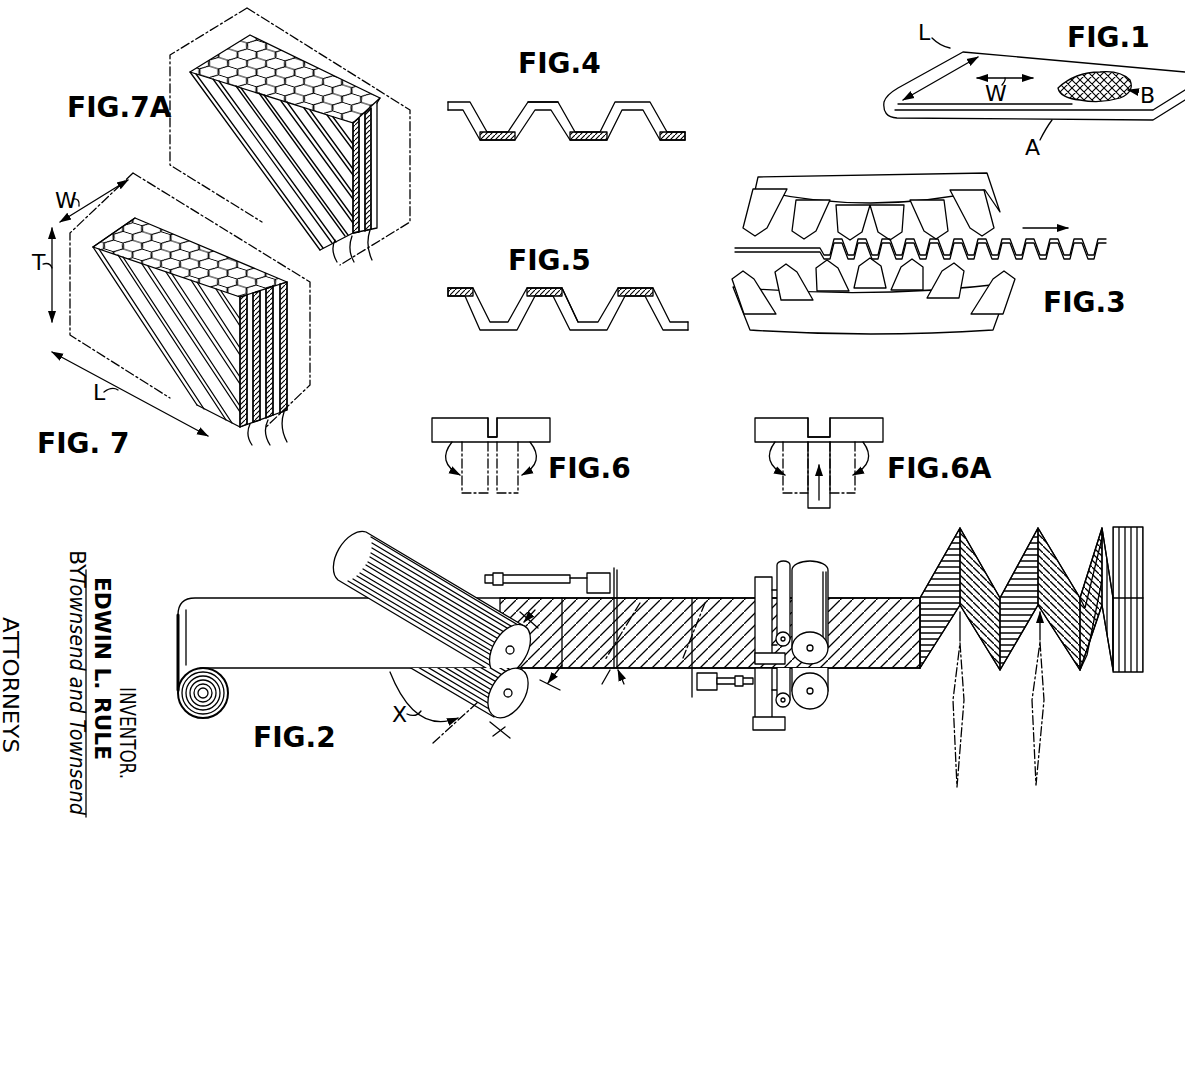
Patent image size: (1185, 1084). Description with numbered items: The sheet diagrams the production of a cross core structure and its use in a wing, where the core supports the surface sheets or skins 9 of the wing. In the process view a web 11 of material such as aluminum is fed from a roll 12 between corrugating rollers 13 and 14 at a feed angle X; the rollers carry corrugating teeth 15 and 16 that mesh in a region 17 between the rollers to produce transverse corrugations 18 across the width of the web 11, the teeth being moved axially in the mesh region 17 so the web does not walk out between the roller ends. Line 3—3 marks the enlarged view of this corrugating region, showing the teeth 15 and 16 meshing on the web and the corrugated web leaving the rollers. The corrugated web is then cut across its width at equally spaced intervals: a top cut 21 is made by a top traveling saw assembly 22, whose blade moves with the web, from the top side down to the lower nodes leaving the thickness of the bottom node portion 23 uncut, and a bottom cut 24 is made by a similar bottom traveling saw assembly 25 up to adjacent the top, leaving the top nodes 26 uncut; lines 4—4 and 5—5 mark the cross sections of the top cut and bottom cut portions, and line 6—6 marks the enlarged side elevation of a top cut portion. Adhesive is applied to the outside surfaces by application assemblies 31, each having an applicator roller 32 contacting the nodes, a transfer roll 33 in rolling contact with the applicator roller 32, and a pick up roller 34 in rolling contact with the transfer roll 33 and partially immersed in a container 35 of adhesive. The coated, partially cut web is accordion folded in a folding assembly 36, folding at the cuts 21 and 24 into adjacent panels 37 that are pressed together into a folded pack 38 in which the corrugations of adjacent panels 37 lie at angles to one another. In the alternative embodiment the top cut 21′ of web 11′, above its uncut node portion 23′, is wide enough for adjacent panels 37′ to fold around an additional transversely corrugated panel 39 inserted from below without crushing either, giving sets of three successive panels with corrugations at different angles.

In FIG. 2, the section line 3— 3 is at (497, 686).
In FIG. 2, the section line 4— 4 is at (632, 633).
In FIG. 2, the section line 5— 5 is at (706, 635).
In FIG. 2, the section line 6- 6 is at (614, 686).
In FIG. 1, the surface sheets or skins 9 is at (930, 104).
In FIG. 4, the web 11 is at (585, 106).
In FIG. 5, the web 11 is at (541, 309).
In FIG. 6, the web 11 is at (513, 411).
In FIG. 2, the web 11 is at (549, 617).
In FIG. 6A, the web 11' is at (846, 419).
In FIG. 2, the roll 12 is at (202, 719).
In FIG. 3, the corrugating roller 13 is at (848, 177).
In FIG. 2, the corrugating roller 13 is at (352, 556).
In FIG. 3, the corrugating roller 14 is at (900, 314).
In FIG. 2, the corrugating roller 14 is at (514, 706).
In FIG. 3, the corrugating teeth 15 is at (897, 215).
In FIG. 3, the corrugating teeth 16 is at (905, 285).
In FIG. 3, the mesh region 17 is at (753, 238).
In FIG. 3, the transverse corrugations 18 is at (1078, 248).
In FIG. 4, the top cut 21 is at (587, 95).
In FIG. 6, the top cut 21 is at (475, 409).
In FIG. 2, the top cut 21 is at (634, 618).
In FIG. 6A, the top cut 21' is at (793, 409).
In FIG. 2, the top traveling saw assembly 22 is at (557, 574).
In FIG. 4, the bottom node portion 23 is at (582, 150).
In FIG. 6, the bottom node portion 23 is at (510, 409).
In FIG. 6A, the adhesive layer (modified) 23' is at (841, 409).
In FIG. 5, the bottom cut 24 is at (568, 312).
In FIG. 2, the bottom cut 24 is at (694, 598).
In FIG. 2, the bottom traveling saw assembly 25 is at (722, 693).
In FIG. 5, the top nodes 26 is at (527, 288).
In FIG. 2, the application assemblies 31 is at (829, 568).
In FIG. 2, the applicator roller 32 is at (830, 590).
In FIG. 2, the transfer roll 33 is at (783, 564).
In FIG. 2, the roller bracket 34 is at (772, 580).
In FIG. 2, the container 35 is at (757, 600).
In FIG. 2, the folding assembly 36 is at (1031, 530).
In FIG. 6, the panels 37 is at (487, 478).
In FIG. 2, the panels 37 is at (1095, 620).
In FIG. 7, the panels 37 is at (195, 340).
In FIG. 6A, the panels 37' is at (829, 478).
In FIG. 7A, the panels 37' is at (285, 156).
In FIG. 2, the folded pack 38 is at (1121, 527).
In FIG. 7, the folded pack 38 is at (178, 422).
In FIG. 6A, the additional corrugated panel 39 is at (825, 508).
In FIG. 2, the additional corrugated panel 39 is at (1032, 723).
In FIG. 7A, the additional corrugated panel 39 is at (380, 116).